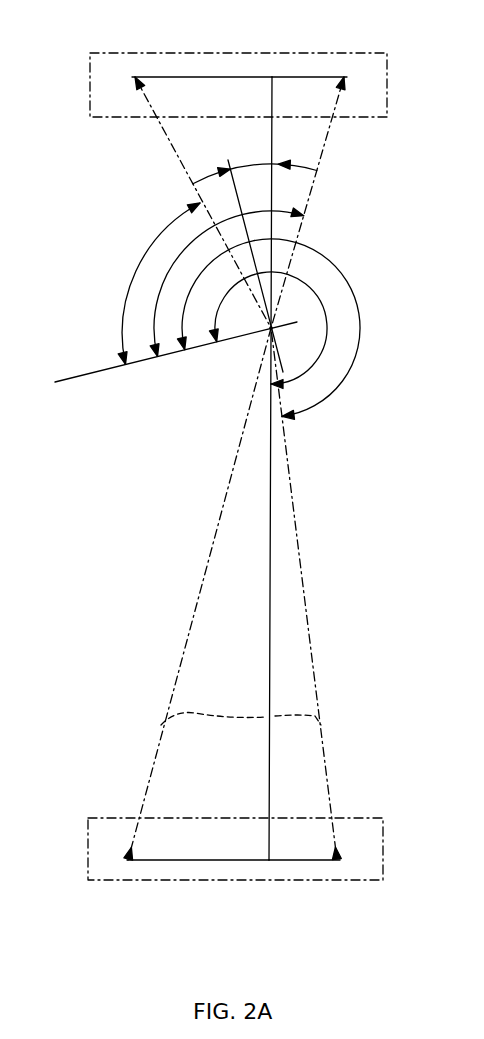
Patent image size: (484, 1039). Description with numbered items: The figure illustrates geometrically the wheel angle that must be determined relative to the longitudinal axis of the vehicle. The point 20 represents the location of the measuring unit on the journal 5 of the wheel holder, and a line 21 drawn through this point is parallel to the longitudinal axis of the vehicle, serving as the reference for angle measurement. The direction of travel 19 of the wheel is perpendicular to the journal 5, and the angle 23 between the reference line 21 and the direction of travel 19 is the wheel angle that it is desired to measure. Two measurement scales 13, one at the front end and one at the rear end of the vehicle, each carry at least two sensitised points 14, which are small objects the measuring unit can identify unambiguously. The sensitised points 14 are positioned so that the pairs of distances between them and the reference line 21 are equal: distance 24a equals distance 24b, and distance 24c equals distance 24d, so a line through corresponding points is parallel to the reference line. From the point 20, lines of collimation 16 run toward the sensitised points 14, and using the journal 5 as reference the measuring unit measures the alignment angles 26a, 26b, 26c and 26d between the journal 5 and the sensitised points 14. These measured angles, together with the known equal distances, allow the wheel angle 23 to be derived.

The journal 5 is at (112, 368).
The measurement scale 13 is at (90, 90).
The sensitised point 14 is at (135, 77).
The line of collimation 16 is at (172, 153).
The direction of travel of the wheel 19 is at (230, 162).
The point 20 is at (270, 333).
The line 21 is at (271, 540).
The angle 23 is at (273, 164).
The distance 24a is at (165, 77).
The distance 24b is at (160, 862).
The distance 24c is at (297, 77).
The distance 24d is at (272, 862).
The alignment angle 26a is at (163, 227).
The alignment angle 26b is at (170, 268).
The alignment angle 26c is at (183, 300).
The alignment angle 26d is at (217, 317).